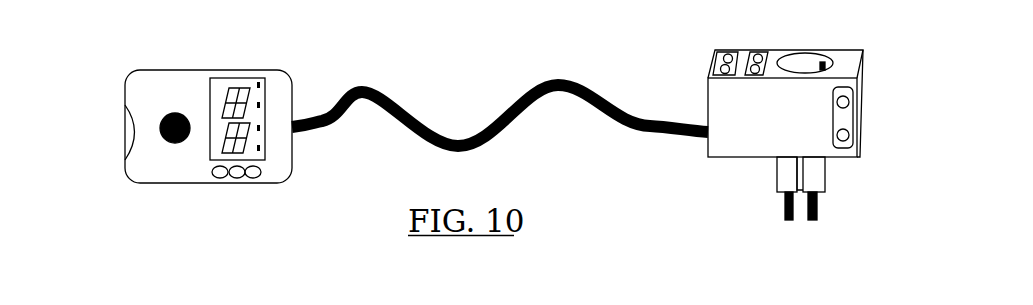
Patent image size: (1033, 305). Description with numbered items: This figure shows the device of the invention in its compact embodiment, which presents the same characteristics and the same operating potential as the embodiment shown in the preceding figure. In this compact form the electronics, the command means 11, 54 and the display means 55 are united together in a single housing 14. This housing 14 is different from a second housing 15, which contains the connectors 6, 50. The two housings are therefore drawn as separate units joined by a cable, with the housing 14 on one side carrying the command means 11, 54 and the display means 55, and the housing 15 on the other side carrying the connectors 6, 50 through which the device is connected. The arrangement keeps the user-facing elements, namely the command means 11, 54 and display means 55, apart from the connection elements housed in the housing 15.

The connector 6 is at (776, 178).
The command means 11 is at (175, 113).
The housing 14 is at (291, 93).
The housing 15 is at (708, 103).
The connector 50 is at (857, 116).
The command means 54 is at (220, 179).
The display means 55 is at (238, 78).